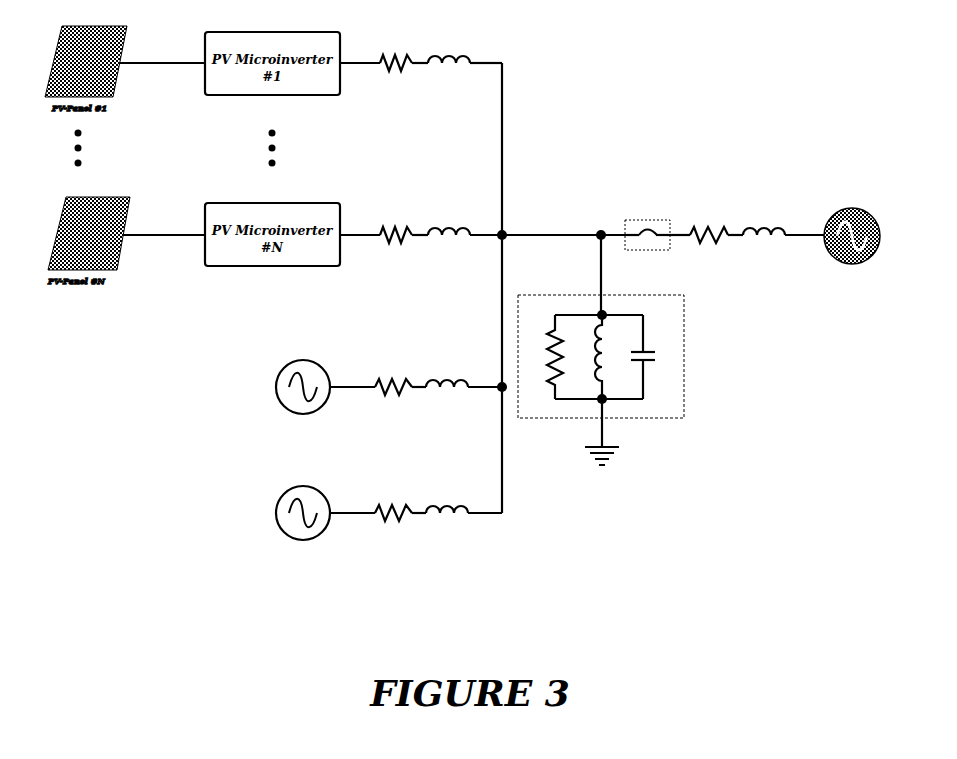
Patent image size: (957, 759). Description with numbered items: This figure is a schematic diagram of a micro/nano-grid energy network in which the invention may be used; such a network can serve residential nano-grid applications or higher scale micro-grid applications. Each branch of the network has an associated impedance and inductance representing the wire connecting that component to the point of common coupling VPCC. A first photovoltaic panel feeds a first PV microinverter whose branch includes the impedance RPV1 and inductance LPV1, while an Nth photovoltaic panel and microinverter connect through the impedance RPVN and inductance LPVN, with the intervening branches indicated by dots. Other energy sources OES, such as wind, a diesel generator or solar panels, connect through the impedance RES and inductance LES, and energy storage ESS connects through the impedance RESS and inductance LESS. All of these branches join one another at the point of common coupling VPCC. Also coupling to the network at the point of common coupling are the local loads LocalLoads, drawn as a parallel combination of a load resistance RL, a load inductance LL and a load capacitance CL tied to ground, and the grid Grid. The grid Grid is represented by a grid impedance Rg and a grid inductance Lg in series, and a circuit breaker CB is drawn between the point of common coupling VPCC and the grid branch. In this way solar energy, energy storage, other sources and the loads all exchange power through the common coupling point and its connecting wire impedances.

The branch impedance RPV1 is at (396, 54).
The branch inductance LPV1 is at (449, 50).
The branch impedance RPVN is at (396, 226).
The branch inductance LPVN is at (449, 222).
The point of common coupling VPCC is at (516, 229).
The circuit breaker CB is at (647, 228).
The grid impedance Rg is at (709, 226).
The grid inductance Lg is at (764, 222).
The grid Grid is at (852, 244).
The local loads LocalLoads is at (642, 356).
The load resistance RL is at (543, 357).
The load inductance LL is at (605, 357).
The load capacitance CL is at (653, 357).
The other energy sources OES is at (303, 412).
The branch impedance RES is at (393, 378).
The branch inductance LES is at (447, 374).
The energy storage ESS is at (303, 530).
The branch impedance RESS is at (393, 504).
The branch inductance LESS is at (447, 500).